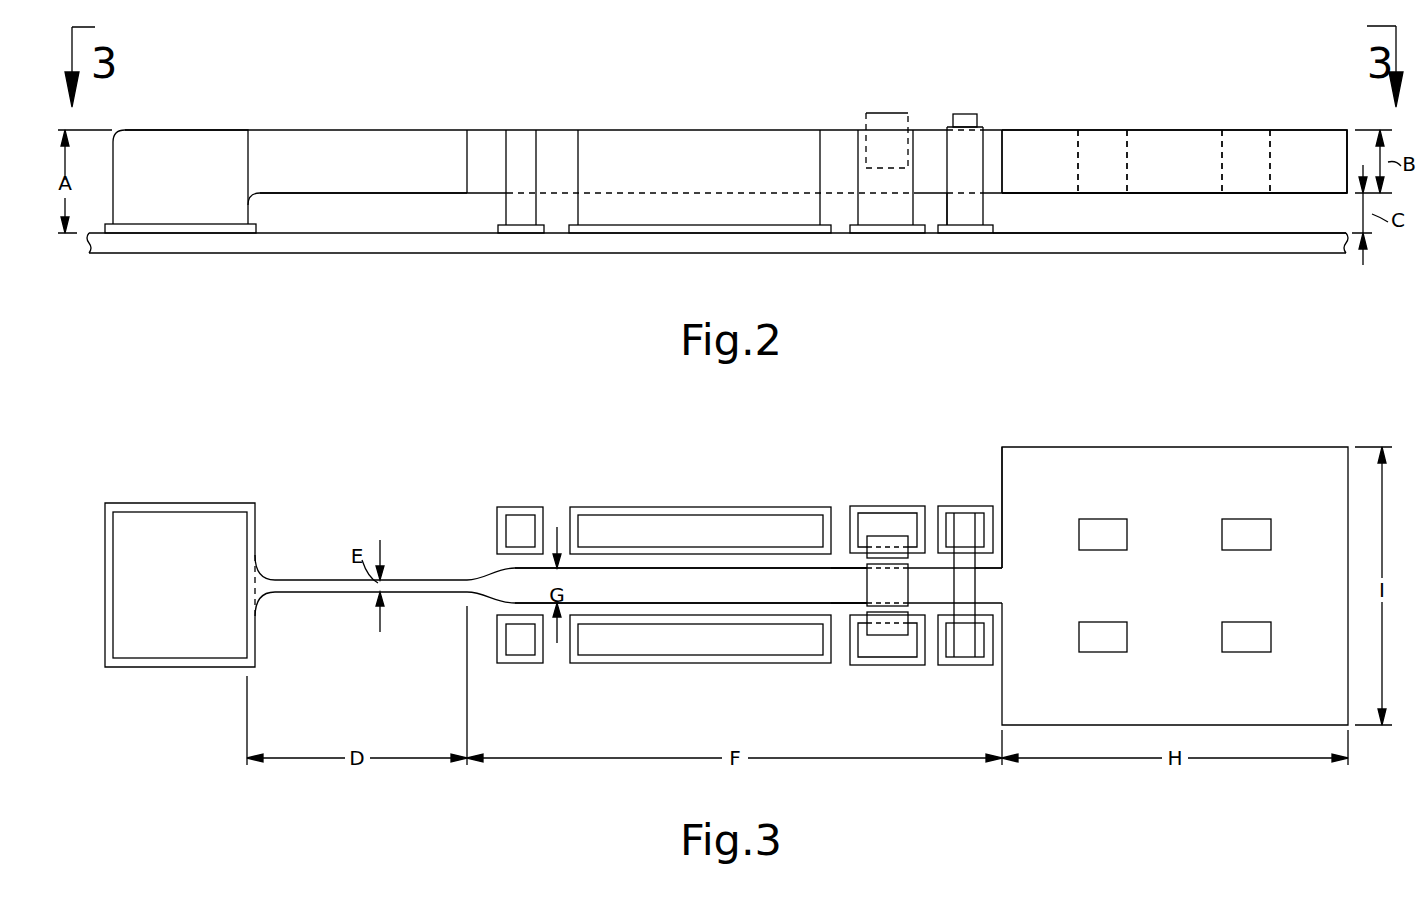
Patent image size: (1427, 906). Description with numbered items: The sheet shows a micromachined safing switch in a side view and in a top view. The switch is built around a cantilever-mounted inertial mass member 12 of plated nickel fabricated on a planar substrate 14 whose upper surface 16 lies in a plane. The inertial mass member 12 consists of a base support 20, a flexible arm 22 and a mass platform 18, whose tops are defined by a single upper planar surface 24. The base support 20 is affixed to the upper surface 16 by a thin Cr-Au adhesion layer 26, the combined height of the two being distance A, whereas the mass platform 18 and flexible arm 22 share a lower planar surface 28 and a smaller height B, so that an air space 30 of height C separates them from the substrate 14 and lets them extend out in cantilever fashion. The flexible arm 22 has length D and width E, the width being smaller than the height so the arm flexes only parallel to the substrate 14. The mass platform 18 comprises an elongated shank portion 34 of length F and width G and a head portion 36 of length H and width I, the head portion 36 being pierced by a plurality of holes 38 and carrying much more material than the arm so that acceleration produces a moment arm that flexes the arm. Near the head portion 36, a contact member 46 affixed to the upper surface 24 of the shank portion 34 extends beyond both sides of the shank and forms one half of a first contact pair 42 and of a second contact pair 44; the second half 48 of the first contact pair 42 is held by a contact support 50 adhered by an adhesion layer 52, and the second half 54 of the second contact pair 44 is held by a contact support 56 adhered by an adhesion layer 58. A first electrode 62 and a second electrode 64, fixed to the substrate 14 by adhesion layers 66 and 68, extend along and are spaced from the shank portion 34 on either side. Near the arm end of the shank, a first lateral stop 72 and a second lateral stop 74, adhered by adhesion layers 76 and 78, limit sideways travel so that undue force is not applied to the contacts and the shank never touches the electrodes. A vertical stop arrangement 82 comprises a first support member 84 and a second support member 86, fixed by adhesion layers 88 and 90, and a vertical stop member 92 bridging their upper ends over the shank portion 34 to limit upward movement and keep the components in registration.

In FIG. 2, the inertial mass member 12 is at (352, 116).
In FIG. 3, the inertial mass member 12 is at (427, 566).
In FIG. 2, the substrate 14 is at (118, 262).
In FIG. 2, the upper surface 16 is at (343, 233).
In FIG. 2, the mass platform 18 is at (1169, 113).
In FIG. 3, the mass platform 18 is at (1170, 430).
In FIG. 2, the base support 20 is at (143, 133).
In FIG. 3, the base support 20 is at (147, 522).
In FIG. 2, the flexible arm 22 is at (360, 193).
In FIG. 3, the flexible arm 22 is at (308, 587).
In FIG. 2, the upper planar surface 24 is at (1300, 130).
In FIG. 2, the adhesion layer 26 is at (218, 228).
In FIG. 3, the adhesion layer 26 is at (217, 508).
In FIG. 2, the lower planar surface 28 is at (1180, 195).
In FIG. 2, the air space 30 is at (1060, 239).
In FIG. 2, the shank portion 34 is at (557, 137).
In FIG. 3, the shank portion 34 is at (483, 602).
In FIG. 2, the head portion 36 is at (1027, 137).
In FIG. 3, the head portion 36 is at (1040, 458).
In FIG. 2, the holes 38 is at (1243, 137).
In FIG. 3, the holes 38 is at (1232, 637).
In FIG. 3, the first contact pair 42 is at (850, 552).
In FIG. 3, the second contact pair 44 is at (850, 618).
In FIG. 3, the contact member 46 is at (875, 583).
In FIG. 3, the second half of first contact pair 48 is at (890, 538).
In FIG. 3, the contact support 50 is at (870, 520).
In FIG. 3, the adhesion layer 52 is at (912, 515).
In FIG. 2, the second half of second contact pair 54 is at (880, 118).
In FIG. 3, the second half of second contact pair 54 is at (890, 630).
In FIG. 2, the contact support 56 is at (866, 213).
In FIG. 3, the contact support 56 is at (872, 650).
In FIG. 2, the adhesion layer 58 is at (892, 232).
In FIG. 3, the adhesion layer 58 is at (912, 660).
In FIG. 3, the first electrode 62 is at (710, 520).
In FIG. 2, the second electrode 64 is at (697, 215).
In FIG. 3, the second electrode 64 is at (712, 650).
In FIG. 3, the adhesion layer 66 is at (680, 510).
In FIG. 2, the adhesion layer 68 is at (603, 228).
In FIG. 3, the adhesion layer 68 is at (682, 662).
In FIG. 3, the first lateral stop 72 is at (527, 517).
In FIG. 2, the second lateral stop 74 is at (521, 213).
In FIG. 3, the second lateral stop 74 is at (527, 650).
In FIG. 3, the adhesion layer 76 is at (516, 508).
In FIG. 2, the adhesion layer 78 is at (518, 228).
In FIG. 3, the adhesion layer 78 is at (516, 662).
In FIG. 3, the vertical stop arrangement 82 is at (998, 577).
In FIG. 3, the first support member 84 is at (980, 530).
In FIG. 2, the second support member 86 is at (948, 215).
In FIG. 3, the second support member 86 is at (980, 640).
In FIG. 3, the adhesion layer 88 is at (968, 505).
In FIG. 2, the adhesion layer 90 is at (975, 233).
In FIG. 3, the adhesion layer 90 is at (968, 668).
In FIG. 2, the vertical stop member 92 is at (963, 114).
In FIG. 3, the vertical stop member 92 is at (968, 596).